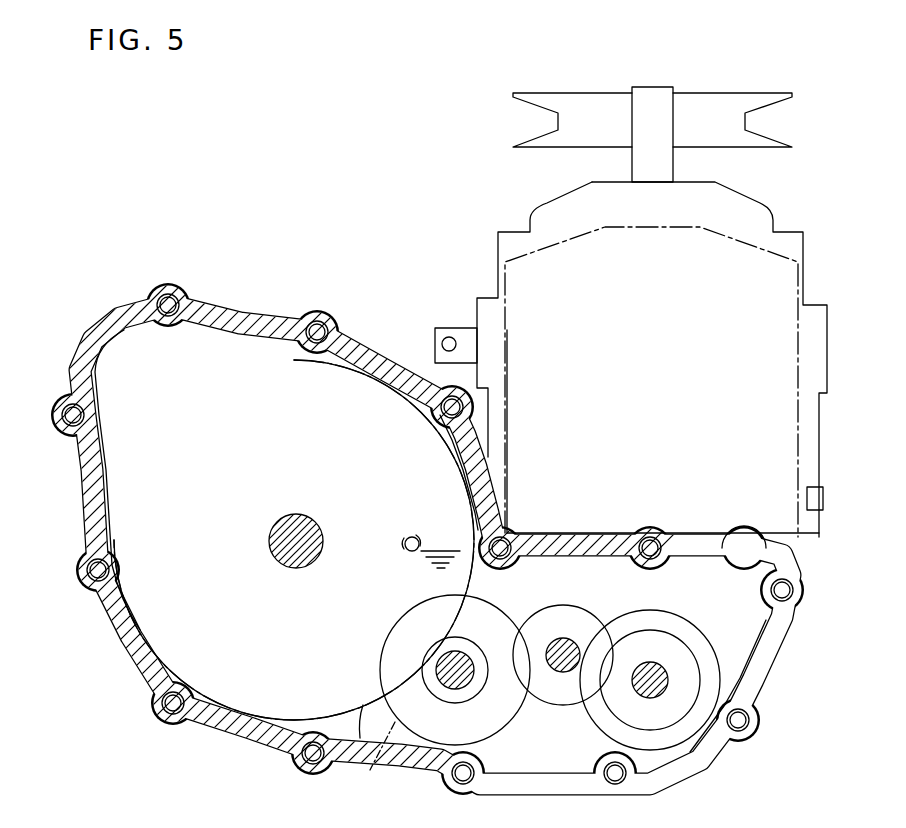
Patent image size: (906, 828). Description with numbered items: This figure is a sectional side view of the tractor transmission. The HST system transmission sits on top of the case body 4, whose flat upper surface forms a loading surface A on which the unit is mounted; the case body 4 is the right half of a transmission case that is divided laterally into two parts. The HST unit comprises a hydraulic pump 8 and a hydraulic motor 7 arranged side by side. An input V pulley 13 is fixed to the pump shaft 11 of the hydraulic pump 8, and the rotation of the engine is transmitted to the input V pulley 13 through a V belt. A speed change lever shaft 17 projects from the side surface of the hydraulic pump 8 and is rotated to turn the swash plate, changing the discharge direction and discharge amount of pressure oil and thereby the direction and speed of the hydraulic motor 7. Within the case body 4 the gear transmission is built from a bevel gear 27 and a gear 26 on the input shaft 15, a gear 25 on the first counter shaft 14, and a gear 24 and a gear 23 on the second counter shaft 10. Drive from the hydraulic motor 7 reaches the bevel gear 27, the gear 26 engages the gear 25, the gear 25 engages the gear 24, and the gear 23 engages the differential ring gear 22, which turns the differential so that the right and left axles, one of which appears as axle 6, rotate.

The case body 4 is at (112, 318).
The axle 6 is at (323, 535).
The hydraulic motor 7 is at (737, 242).
The hydraulic pump 8 is at (528, 215).
The second counter shaft 10 is at (450, 648).
The pump shaft 11 is at (651, 87).
The input V pulley 13 is at (772, 93).
The first counter shaft 14 is at (558, 672).
The input shaft 15 is at (649, 698).
The speed change lever shaft 17 is at (443, 328).
The differential ring gear 22 is at (345, 760).
The gear 23 is at (437, 700).
The gear 24 is at (386, 748).
The gear 25 is at (537, 703).
The gear 26 is at (703, 660).
The bevel gear 27 is at (692, 618).
The loading surface A is at (755, 535).